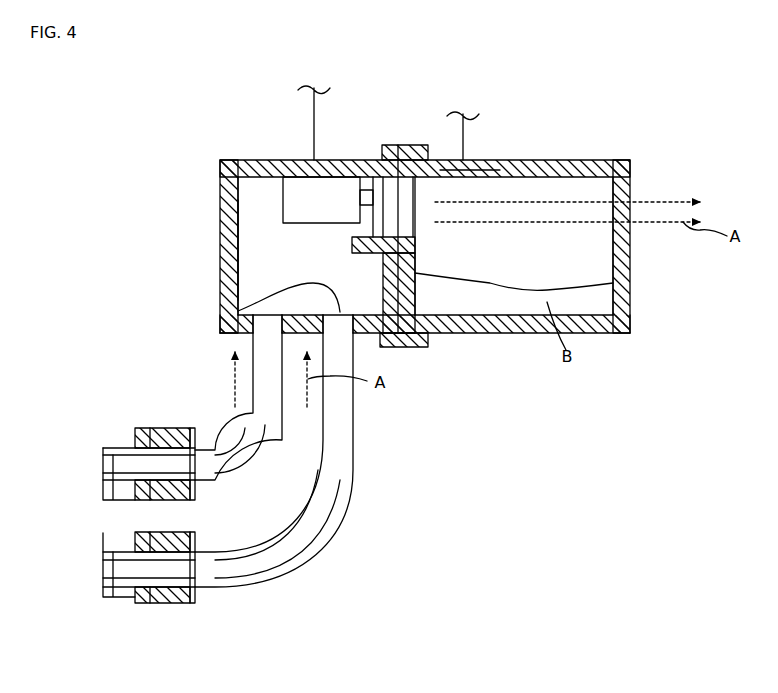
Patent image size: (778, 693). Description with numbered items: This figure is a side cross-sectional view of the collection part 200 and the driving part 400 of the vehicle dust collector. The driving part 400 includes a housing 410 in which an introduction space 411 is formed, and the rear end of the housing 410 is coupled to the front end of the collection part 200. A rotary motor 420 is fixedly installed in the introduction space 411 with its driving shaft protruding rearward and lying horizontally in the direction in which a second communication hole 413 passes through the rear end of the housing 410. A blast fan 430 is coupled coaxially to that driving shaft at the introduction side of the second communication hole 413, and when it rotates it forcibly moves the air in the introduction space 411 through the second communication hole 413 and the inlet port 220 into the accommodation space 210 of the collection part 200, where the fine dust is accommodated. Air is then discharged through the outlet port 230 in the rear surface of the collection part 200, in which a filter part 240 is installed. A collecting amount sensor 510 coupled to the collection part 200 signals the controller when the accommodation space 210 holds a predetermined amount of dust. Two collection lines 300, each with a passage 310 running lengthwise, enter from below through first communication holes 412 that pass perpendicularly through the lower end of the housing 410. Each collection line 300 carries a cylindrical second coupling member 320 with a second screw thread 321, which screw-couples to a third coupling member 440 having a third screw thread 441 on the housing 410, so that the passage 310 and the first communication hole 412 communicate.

The driving part 400 is at (225, 158).
The housing 410 is at (222, 237).
The introduction space 411 is at (256, 275).
The first communication hole 412 is at (252, 315).
The rotary motor 420 is at (300, 186).
The blast fan 430 is at (373, 177).
The second communication hole 413 is at (391, 150).
The collecting amount sensor 510 is at (470, 168).
The collection part 200 is at (566, 160).
The outlet port 230 is at (632, 183).
The filter part 240 is at (630, 195).
The accommodation space 210 is at (618, 262).
The inlet port 220 is at (415, 223).
The collection line 300 is at (110, 500).
The passage 310 is at (114, 465).
The second coupling member 320 is at (135, 428).
The second screw thread 321 is at (192, 430).
The third coupling member 440 is at (175, 430).
The third screw thread 441 is at (150, 432).